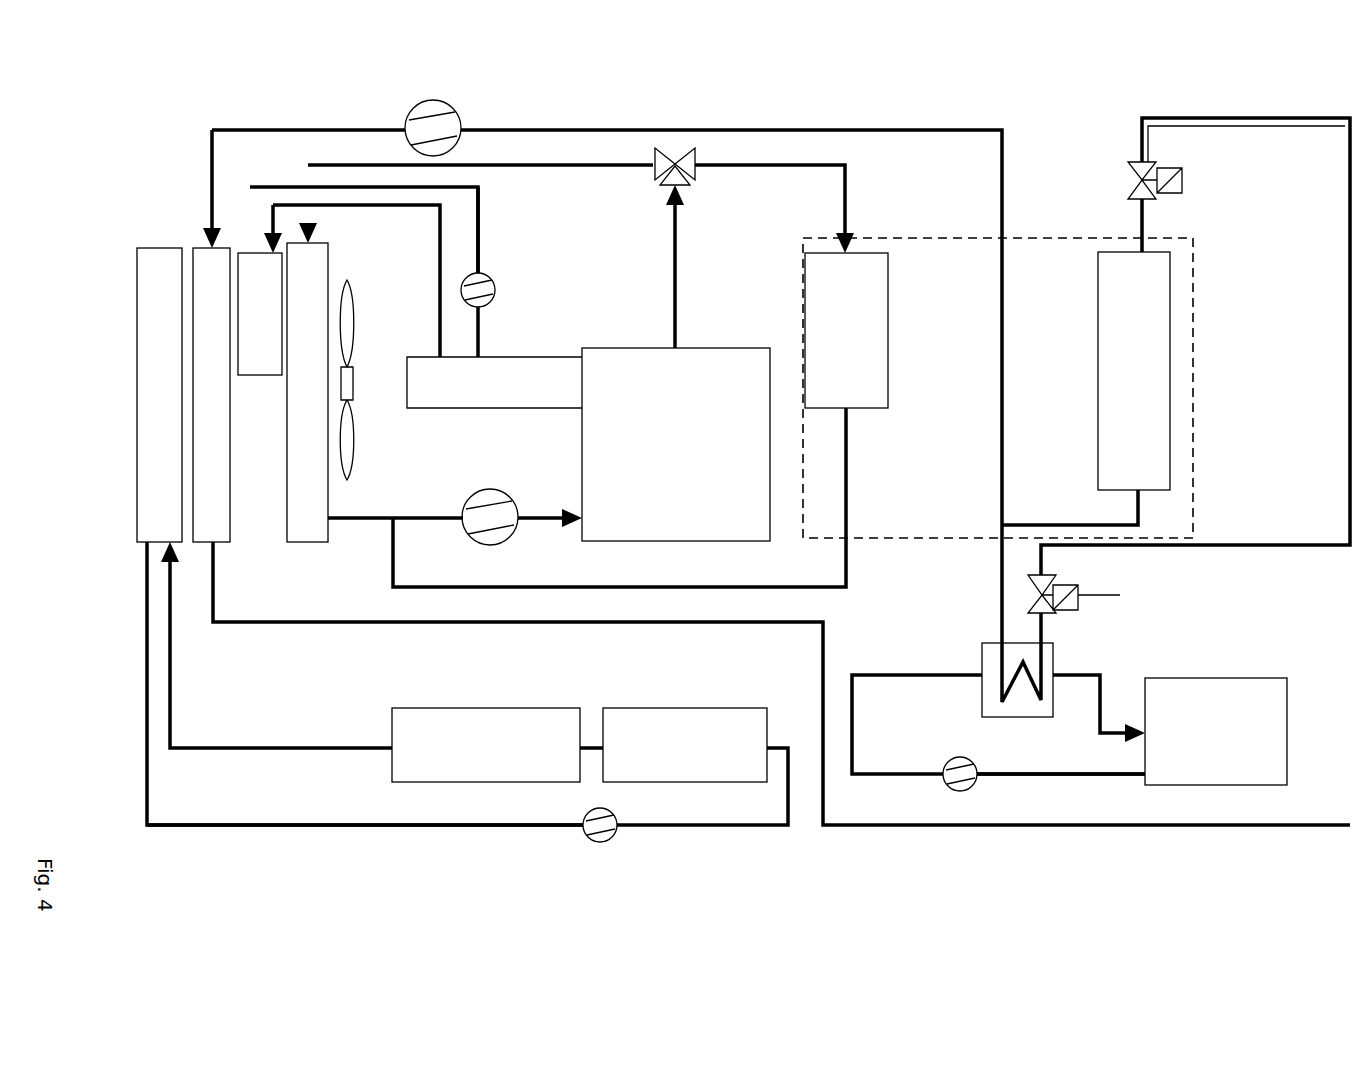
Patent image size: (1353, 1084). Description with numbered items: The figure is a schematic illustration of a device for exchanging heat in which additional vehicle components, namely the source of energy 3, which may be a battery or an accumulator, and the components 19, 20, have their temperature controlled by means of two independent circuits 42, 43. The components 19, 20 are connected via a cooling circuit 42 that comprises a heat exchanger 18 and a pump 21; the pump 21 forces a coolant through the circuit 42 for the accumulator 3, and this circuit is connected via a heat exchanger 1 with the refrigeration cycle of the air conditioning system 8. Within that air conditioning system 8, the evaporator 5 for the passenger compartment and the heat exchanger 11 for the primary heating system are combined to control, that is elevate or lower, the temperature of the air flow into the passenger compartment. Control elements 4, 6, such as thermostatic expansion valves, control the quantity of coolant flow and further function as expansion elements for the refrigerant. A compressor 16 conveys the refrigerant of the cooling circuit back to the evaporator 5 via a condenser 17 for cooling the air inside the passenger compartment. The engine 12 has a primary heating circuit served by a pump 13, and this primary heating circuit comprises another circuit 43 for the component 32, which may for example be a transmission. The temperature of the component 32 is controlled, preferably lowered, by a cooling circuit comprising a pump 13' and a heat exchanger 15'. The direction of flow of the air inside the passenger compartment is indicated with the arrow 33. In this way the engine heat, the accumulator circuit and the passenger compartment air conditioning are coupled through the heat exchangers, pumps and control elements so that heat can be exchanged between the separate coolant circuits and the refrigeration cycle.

The heat exchanger 1 is at (985, 699).
The source of energy 3 is at (1160, 779).
The control element 4 is at (1069, 592).
The evaporator 5 is at (1112, 375).
The control element 6 is at (1132, 181).
The air conditioning system 8 is at (972, 533).
The heat exchanger 11 is at (822, 273).
The engine 12 is at (664, 537).
The pump 13 is at (462, 526).
The pump 13' is at (515, 284).
The heat exchanger 15' is at (260, 338).
The compressor 16 is at (446, 117).
The condenser 17 is at (205, 521).
The heat exchanger 18 is at (150, 518).
The vehicle component 19 is at (425, 719).
The vehicle component 20 is at (643, 719).
The pump 21 is at (950, 786).
The component 32 is at (510, 403).
The arrow 33 is at (480, 249).
The cooling circuit 42 is at (492, 828).
The circuit 43 is at (1047, 776).